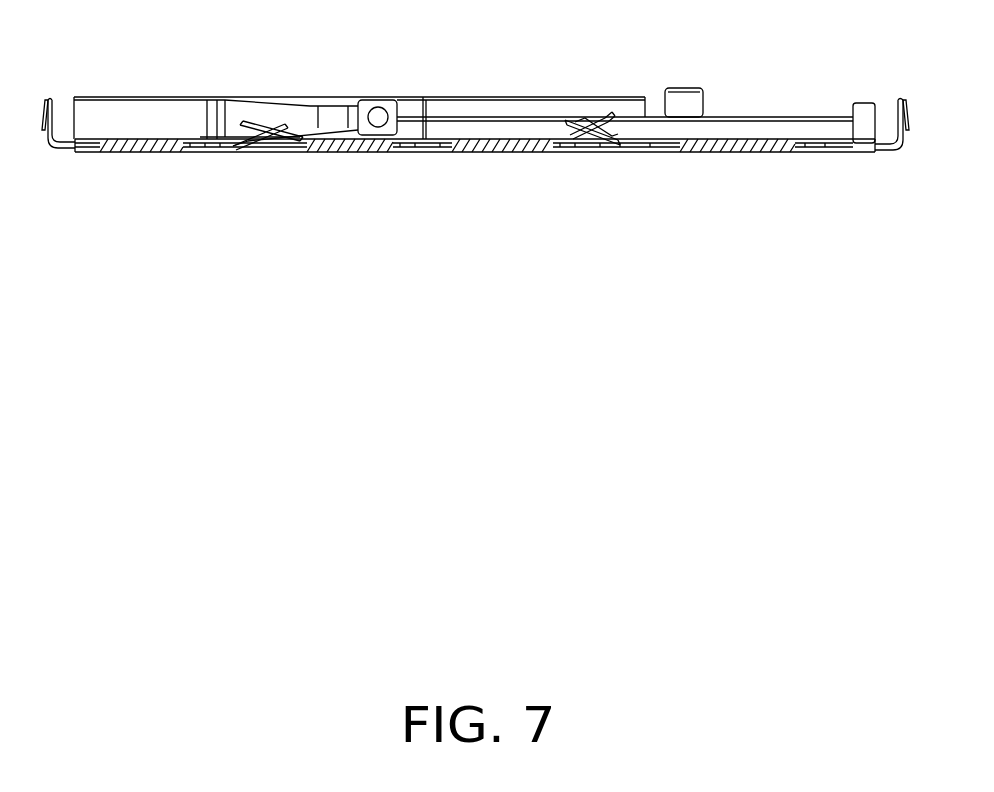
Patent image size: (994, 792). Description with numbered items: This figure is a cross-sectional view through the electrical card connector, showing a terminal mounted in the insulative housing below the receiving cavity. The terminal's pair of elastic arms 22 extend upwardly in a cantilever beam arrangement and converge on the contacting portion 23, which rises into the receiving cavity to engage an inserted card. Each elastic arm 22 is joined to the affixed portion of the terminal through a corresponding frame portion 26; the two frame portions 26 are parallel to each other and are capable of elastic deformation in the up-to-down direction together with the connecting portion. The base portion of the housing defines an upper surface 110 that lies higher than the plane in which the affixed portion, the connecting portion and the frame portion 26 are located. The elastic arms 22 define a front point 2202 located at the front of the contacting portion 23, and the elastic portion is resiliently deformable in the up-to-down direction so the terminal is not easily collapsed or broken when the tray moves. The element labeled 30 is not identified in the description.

The elastic arm 22 is at (600, 138).
The contacting portion 23 is at (575, 122).
The frame portion 26 is at (670, 152).
The bracket 30 is at (886, 130).
The upper surface 110 is at (705, 130).
The front point 2202 is at (612, 142).